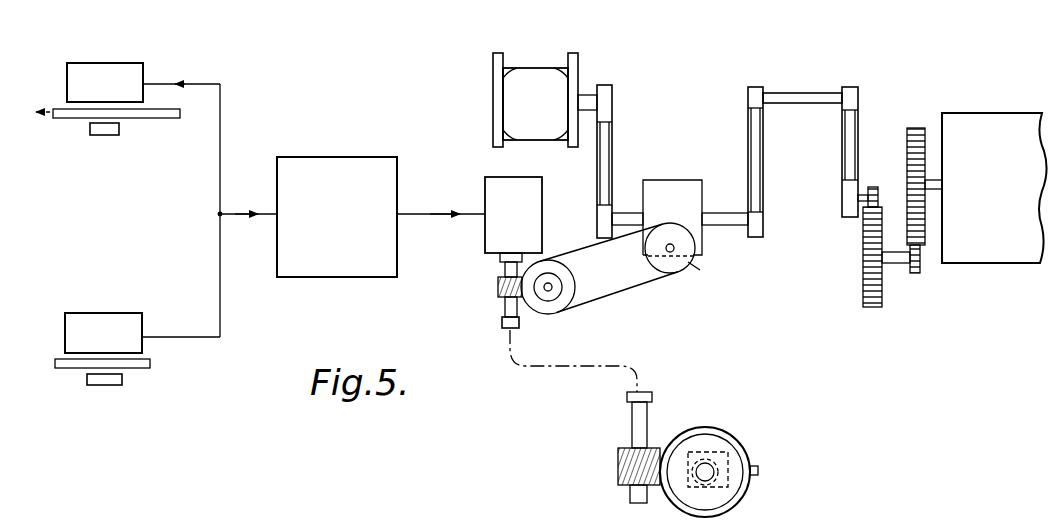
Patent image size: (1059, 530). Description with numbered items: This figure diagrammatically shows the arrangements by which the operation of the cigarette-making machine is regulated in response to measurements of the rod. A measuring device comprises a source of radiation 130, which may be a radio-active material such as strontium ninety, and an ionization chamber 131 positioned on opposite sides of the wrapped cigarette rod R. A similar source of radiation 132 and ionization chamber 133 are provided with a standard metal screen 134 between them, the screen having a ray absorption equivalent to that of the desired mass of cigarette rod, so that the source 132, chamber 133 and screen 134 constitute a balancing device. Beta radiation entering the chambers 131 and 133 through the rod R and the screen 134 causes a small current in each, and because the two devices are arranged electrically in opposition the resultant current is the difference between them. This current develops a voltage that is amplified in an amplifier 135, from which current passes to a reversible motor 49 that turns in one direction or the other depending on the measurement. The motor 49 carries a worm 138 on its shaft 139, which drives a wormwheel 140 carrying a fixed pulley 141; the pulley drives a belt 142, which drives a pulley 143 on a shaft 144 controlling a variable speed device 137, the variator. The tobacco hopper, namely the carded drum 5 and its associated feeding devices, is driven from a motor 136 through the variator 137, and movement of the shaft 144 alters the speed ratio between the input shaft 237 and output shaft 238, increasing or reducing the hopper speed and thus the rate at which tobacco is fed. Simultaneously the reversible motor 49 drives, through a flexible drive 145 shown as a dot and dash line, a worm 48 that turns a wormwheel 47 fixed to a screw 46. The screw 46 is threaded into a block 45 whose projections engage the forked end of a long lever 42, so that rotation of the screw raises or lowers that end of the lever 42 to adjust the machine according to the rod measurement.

The ionization chamber 131 is at (122, 72).
The wrapped cigarette rod R is at (165, 121).
The source of radiation 130 is at (104, 135).
The ionization chamber 133 is at (100, 326).
The standard metal screen 134 is at (150, 364).
The source of radiation 132 is at (108, 386).
The amplifier 135 is at (337, 217).
The reversible motor 49 is at (513, 247).
The worm 138 is at (498, 287).
The shaft 139 is at (505, 311).
The wormwheel 140 is at (540, 264).
The pulley 141 is at (560, 289).
The belt 142 is at (650, 280).
The shaft 144 is at (672, 244).
The pulley 143 is at (700, 270).
The variable speed device 137 is at (668, 180).
The input shaft 237 is at (625, 213).
The output shaft 238 is at (722, 213).
The motor 136 is at (545, 100).
The carded drum 5 is at (994, 188).
The flexible drive 145 is at (556, 367).
The worm 48 is at (618, 462).
The wormwheel 47 is at (736, 433).
The block 45 is at (708, 451).
The screw 46 is at (712, 476).
The lever 42 is at (758, 470).